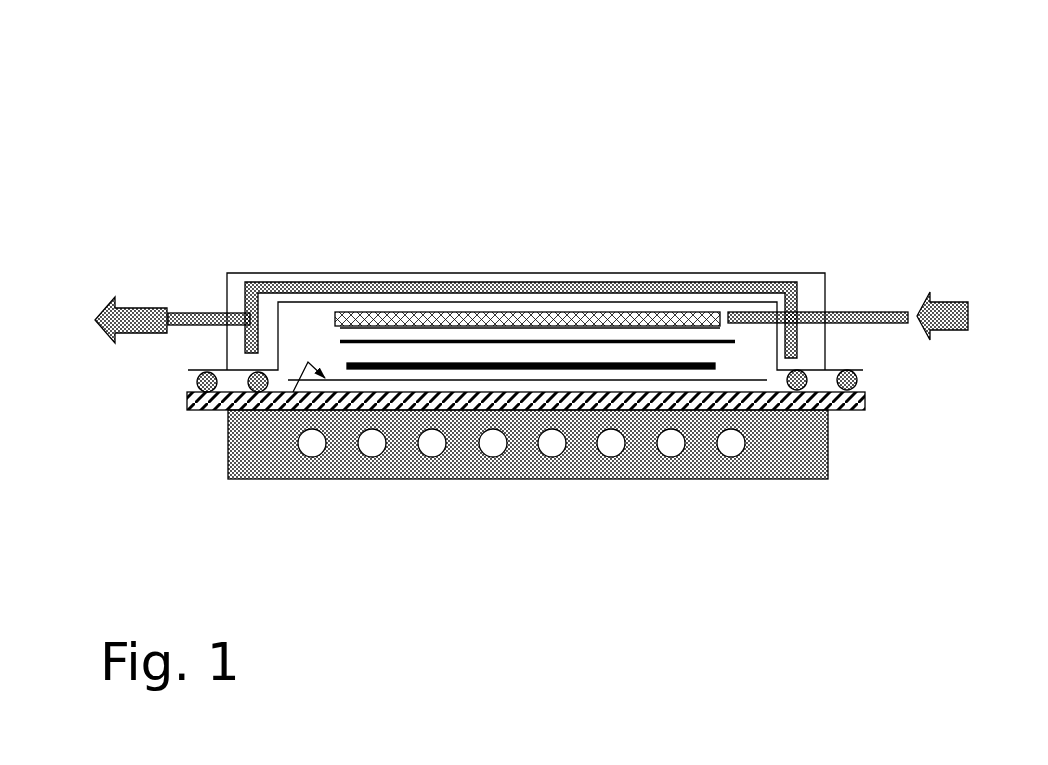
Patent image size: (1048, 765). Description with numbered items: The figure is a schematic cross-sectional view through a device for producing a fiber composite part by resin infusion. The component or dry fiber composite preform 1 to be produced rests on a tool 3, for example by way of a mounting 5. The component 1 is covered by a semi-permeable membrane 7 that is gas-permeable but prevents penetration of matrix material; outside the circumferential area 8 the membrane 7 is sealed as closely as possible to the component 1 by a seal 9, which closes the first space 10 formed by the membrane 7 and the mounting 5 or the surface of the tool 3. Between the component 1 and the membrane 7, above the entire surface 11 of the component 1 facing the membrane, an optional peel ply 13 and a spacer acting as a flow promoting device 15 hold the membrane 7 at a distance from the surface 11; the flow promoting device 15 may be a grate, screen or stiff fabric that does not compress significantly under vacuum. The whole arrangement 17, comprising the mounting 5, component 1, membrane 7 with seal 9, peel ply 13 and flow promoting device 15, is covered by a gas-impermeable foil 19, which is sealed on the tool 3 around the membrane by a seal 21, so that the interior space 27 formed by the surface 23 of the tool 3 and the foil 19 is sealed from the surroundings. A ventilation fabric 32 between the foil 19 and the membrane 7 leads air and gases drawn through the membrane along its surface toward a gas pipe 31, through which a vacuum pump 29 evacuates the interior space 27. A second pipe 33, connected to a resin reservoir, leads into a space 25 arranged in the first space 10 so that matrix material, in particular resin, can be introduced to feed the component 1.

The component or dry fiber composite preform 1 is at (423, 357).
The tool 3 is at (870, 410).
The mounting 5 is at (243, 480).
The semi-permeable membrane 7 is at (648, 295).
The circumferential area 8 is at (345, 362).
The seal 9 is at (247, 386).
The first space 10 is at (307, 332).
The surface 11 is at (498, 338).
The peel ply 13 is at (690, 338).
The flow promoting device 15 is at (578, 310).
The arrangement 17 is at (238, 367).
The foil 19 is at (450, 268).
The seal 21 is at (190, 383).
The surface 23 is at (818, 385).
The space 25 is at (236, 283).
The interior space 27 is at (237, 360).
The vacuum pump 29 is at (514, 297).
The gas pipe 31 is at (190, 312).
The ventilation fabric 32 is at (257, 277).
The pipe 33 is at (848, 307).